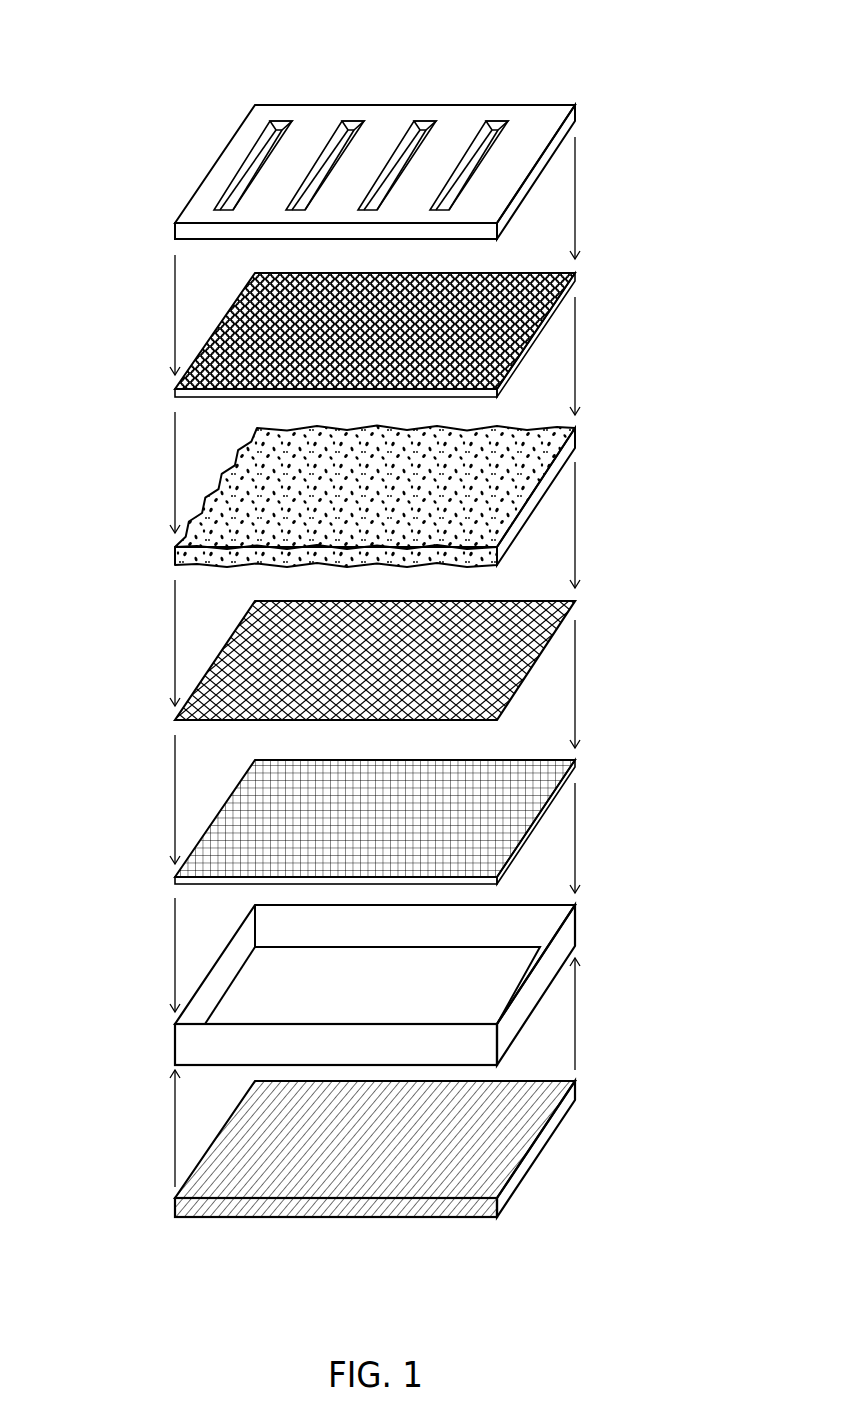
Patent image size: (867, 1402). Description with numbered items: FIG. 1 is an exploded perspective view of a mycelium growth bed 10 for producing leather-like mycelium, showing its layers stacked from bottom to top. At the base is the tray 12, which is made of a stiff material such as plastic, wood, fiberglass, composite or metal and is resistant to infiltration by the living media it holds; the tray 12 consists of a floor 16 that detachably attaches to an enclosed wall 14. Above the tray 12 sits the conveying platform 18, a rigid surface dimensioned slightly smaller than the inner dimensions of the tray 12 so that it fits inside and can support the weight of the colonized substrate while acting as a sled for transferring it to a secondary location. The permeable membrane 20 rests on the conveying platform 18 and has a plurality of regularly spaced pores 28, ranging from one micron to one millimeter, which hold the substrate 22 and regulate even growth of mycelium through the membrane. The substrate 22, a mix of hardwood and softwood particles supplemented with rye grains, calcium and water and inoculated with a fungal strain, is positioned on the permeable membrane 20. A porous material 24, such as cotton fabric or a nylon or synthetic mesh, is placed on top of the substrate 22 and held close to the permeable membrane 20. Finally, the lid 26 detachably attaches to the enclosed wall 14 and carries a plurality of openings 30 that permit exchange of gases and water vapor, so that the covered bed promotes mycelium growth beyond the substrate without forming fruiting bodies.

The mycelium growth bed 10 is at (424, 66).
The tray 12 is at (374, 1061).
The enclosed wall 14 is at (584, 923).
The floor 16 is at (584, 1083).
The conveying platform 18 is at (584, 763).
The permeable membrane 20 is at (396, 653).
The substrate 22 is at (584, 443).
The porous material 24 is at (584, 282).
The lid 26 is at (420, 172).
The pores 28 is at (230, 633).
The openings 30 is at (247, 182).